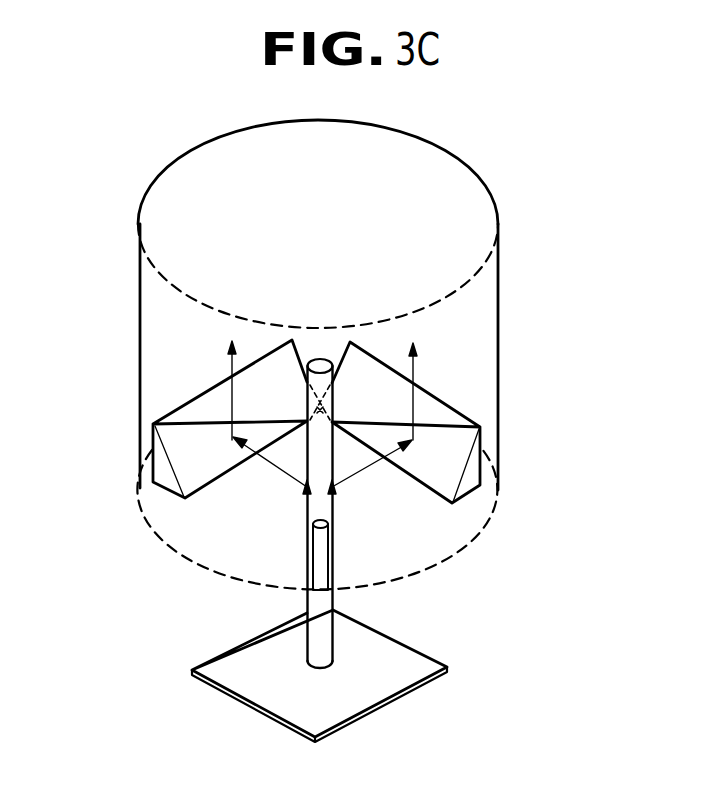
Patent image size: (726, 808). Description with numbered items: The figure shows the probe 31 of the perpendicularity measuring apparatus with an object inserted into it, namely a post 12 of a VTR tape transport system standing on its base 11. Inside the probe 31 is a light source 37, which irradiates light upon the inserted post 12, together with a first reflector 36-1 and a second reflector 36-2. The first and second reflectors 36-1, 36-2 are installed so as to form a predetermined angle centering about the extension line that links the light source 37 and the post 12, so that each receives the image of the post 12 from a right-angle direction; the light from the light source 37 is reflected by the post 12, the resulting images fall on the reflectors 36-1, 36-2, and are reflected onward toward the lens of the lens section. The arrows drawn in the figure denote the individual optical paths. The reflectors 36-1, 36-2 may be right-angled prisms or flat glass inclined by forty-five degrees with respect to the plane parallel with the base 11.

The probe 31 is at (500, 262).
The first reflector 36-1 is at (185, 421).
The second reflector 36-2 is at (455, 418).
The light source 37 is at (307, 555).
The post 12 is at (323, 603).
The base 11 is at (418, 664).